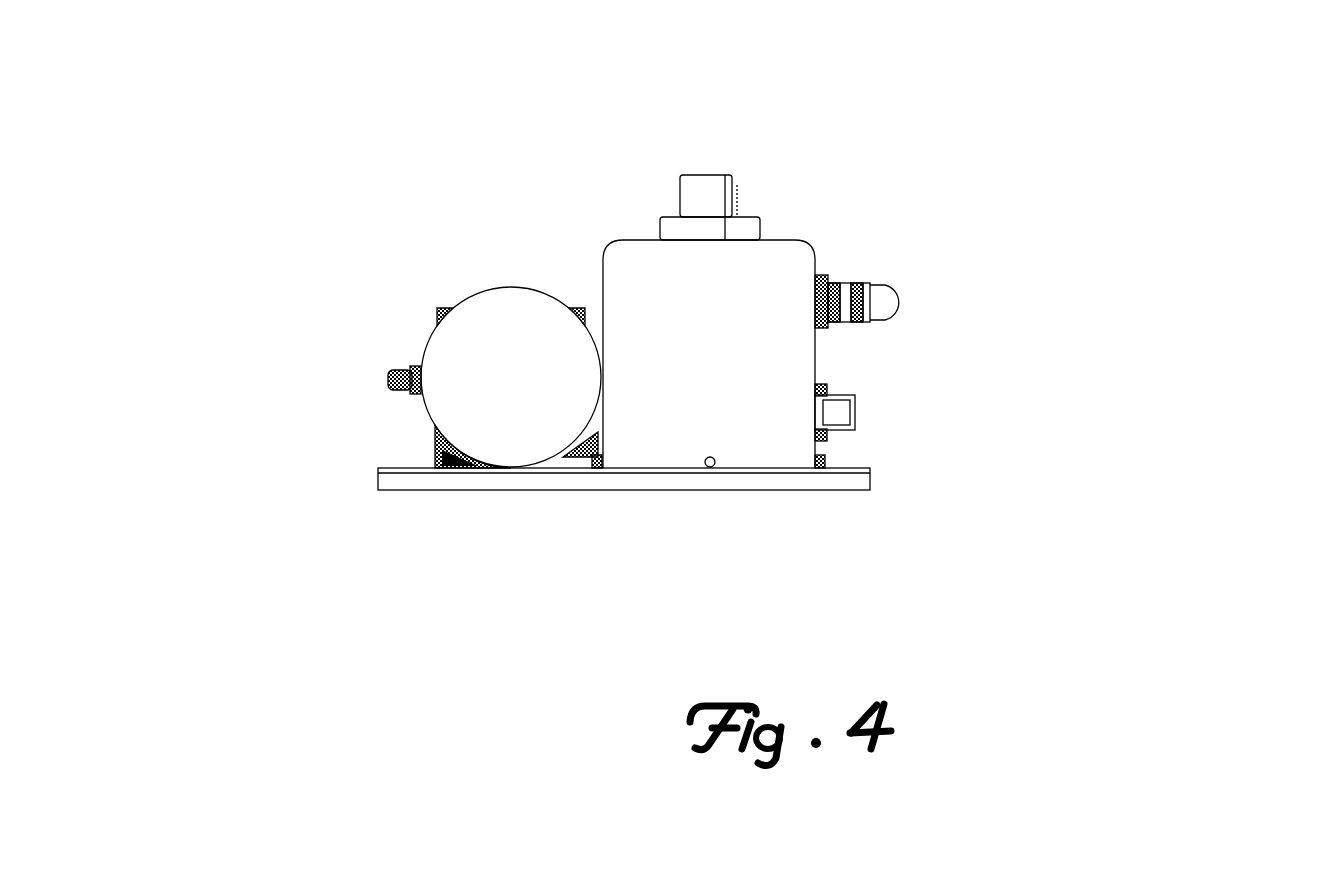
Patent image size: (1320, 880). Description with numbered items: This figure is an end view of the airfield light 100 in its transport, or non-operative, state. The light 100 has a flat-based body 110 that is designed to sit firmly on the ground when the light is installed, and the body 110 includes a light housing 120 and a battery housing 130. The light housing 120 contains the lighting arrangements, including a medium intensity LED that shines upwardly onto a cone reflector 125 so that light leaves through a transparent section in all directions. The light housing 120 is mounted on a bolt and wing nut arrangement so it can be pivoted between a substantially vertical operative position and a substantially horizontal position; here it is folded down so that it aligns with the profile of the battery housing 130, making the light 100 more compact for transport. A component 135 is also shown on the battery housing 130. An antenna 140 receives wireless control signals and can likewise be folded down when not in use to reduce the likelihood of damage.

The airfield light 100 is at (1037, 252).
The flat-based body 110 is at (823, 477).
The light housing 120 is at (437, 422).
The cone reflector 125 is at (520, 358).
The battery housing 130 is at (625, 272).
The inlet fitting 135 is at (700, 217).
The antenna 140 is at (903, 305).